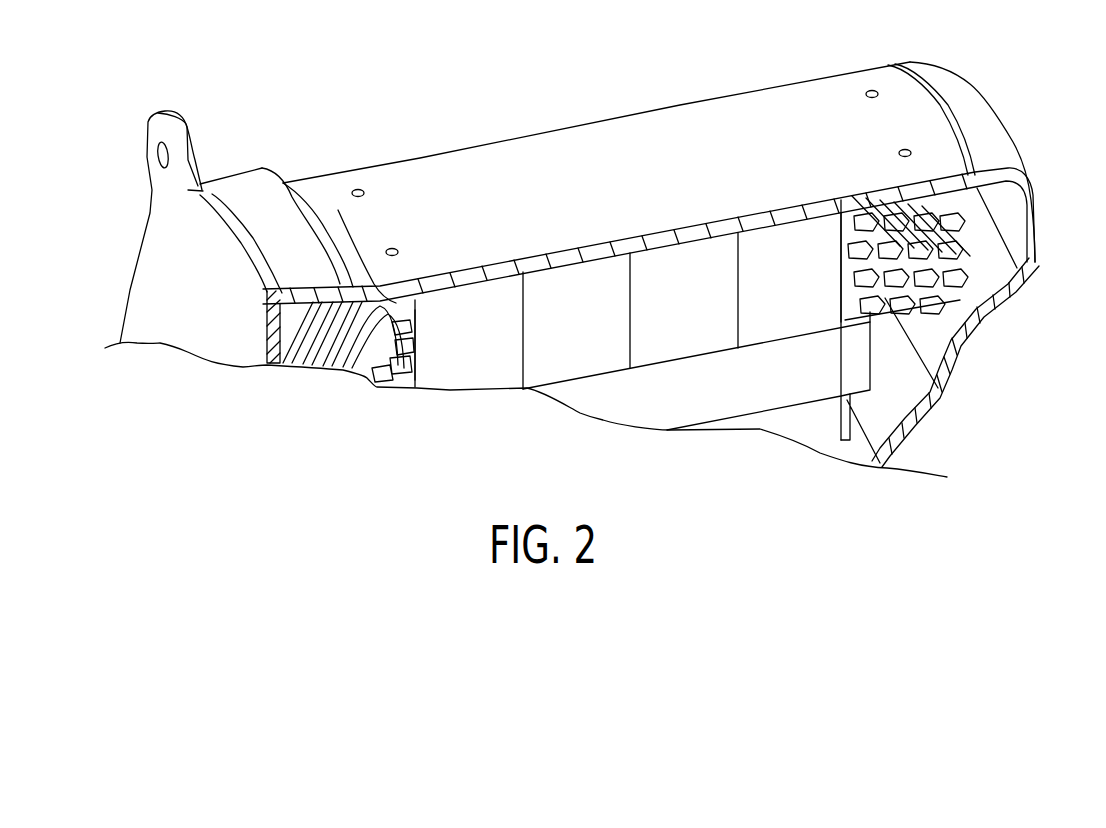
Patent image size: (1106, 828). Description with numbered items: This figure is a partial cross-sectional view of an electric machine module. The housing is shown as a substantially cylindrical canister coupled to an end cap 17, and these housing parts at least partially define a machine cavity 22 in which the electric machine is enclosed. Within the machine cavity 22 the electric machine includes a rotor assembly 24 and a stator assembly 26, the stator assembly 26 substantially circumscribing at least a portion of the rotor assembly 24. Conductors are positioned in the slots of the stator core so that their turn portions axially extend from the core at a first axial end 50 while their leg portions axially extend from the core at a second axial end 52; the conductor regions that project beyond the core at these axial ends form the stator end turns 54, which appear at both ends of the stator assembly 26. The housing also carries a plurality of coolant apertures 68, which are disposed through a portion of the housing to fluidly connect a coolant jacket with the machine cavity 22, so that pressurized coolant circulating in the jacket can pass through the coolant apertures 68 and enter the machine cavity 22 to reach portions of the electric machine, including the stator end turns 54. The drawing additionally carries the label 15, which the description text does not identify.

The housing shell / end wall 15 is at (930, 142).
The end cap 17 is at (180, 245).
The machine cavity 22 is at (890, 343).
The rotor assembly 24 is at (743, 380).
The stator assembly 26 is at (565, 353).
The first axial end 50 is at (378, 298).
The second axial end 52 is at (878, 213).
The stator end turns 54 is at (367, 372).
The coolant apertures 68 is at (394, 249).